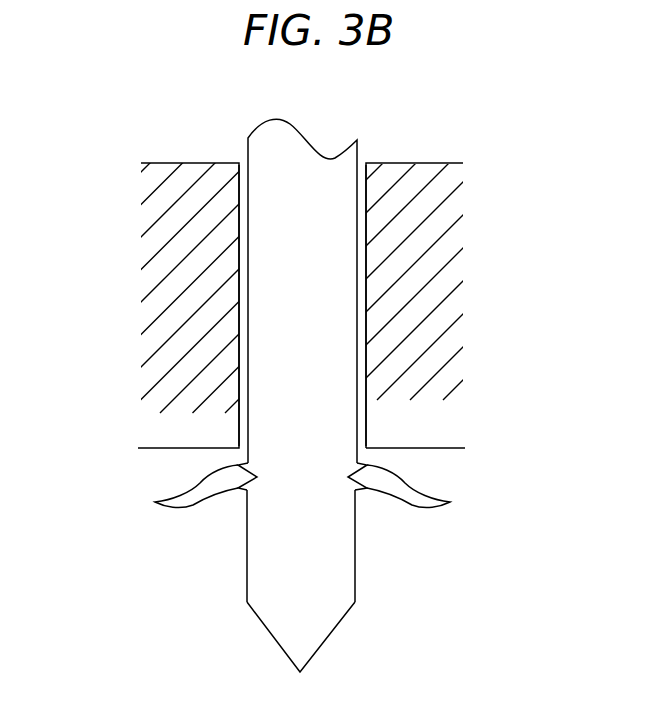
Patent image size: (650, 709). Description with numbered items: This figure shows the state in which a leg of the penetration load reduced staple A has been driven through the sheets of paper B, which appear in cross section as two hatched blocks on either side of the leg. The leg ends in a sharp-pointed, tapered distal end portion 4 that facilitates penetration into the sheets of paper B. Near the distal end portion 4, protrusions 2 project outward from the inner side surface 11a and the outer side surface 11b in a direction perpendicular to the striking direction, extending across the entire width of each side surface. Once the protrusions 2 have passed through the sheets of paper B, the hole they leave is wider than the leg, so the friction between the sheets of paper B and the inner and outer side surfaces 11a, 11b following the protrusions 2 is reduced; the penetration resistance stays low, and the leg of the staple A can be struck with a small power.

The staple A is at (288, 180).
The sheets of paper B is at (440, 353).
The inner side surface 11a is at (248, 300).
The outer side surface 11b is at (357, 247).
The protrusions 2 is at (299, 488).
The distal end portion 4 is at (312, 622).